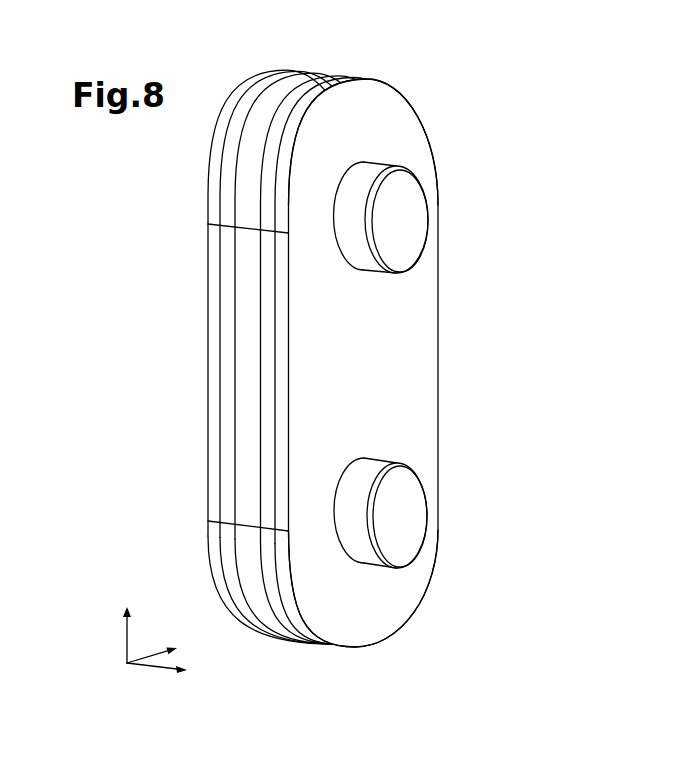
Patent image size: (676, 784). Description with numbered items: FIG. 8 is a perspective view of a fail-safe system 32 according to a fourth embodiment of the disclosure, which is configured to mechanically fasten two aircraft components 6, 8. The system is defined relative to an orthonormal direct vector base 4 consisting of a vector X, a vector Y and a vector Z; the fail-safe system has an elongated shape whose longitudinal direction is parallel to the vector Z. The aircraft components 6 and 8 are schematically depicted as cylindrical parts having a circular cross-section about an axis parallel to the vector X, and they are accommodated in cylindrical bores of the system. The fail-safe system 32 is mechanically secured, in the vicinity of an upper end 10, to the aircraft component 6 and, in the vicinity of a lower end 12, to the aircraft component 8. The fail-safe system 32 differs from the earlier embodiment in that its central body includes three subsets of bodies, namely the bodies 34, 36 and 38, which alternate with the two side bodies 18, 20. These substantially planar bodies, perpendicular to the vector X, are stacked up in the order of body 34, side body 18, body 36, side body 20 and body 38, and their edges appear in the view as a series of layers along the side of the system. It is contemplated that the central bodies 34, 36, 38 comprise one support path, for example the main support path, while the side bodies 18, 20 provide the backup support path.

The orthonormal direct vector base 4 is at (88, 637).
The aircraft component 6 is at (407, 227).
The aircraft component 8 is at (391, 521).
The upper end 10 is at (361, 80).
The lower end 12 is at (333, 645).
The side body 18 is at (267, 470).
The side body 20 is at (228, 417).
The fail-safe system 32 is at (464, 74).
The body 34 is at (283, 497).
The body 36 is at (243, 453).
The body 38 is at (216, 389).